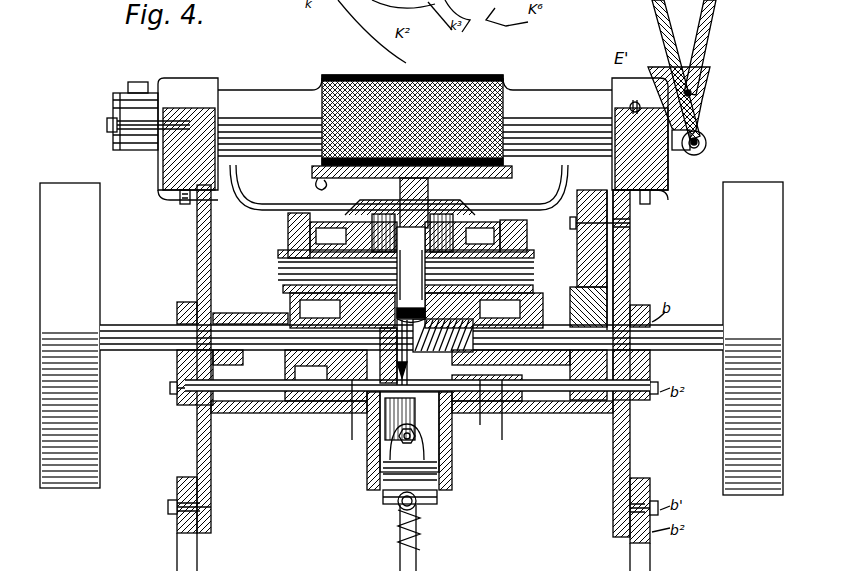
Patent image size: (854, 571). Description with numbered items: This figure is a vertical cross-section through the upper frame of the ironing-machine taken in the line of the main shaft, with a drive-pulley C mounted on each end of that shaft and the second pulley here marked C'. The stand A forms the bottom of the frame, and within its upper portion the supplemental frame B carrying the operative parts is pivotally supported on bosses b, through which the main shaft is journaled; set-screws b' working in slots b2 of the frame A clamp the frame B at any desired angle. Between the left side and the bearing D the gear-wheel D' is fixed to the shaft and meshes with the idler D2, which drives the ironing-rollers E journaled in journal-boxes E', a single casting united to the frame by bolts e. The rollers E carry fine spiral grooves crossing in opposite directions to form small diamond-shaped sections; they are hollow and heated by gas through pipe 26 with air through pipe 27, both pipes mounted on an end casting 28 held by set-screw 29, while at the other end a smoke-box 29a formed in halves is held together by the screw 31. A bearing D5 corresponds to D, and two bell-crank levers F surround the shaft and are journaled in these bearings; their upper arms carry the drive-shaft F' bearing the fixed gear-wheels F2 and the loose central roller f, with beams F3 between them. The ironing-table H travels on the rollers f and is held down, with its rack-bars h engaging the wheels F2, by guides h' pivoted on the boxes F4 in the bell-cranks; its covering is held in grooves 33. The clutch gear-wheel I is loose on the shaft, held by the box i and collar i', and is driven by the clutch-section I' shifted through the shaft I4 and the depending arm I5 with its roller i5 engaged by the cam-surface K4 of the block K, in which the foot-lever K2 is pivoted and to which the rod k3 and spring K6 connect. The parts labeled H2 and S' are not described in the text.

The drive-pulley C is at (70, 335).
The wheel C' is at (753, 338).
The stand or bottom portion of the frame A is at (177, 484).
The supplemental frame B is at (452, 442).
The bosses b is at (217, 310).
The set-screws b' is at (178, 508).
The slots b2 is at (170, 388).
The bearing D is at (417, 375).
The gear-wheel D' is at (613, 305).
The idler D2 is at (590, 256).
The bearing D5 is at (330, 400).
The ironing-rollers E is at (415, 113).
The journal-boxes E' is at (188, 127).
The bolts e is at (185, 204).
The bell-crank levers F is at (402, 306).
The drive-shaft F' is at (396, 253).
The gear-wheels F2 is at (410, 191).
The beams F3 is at (405, 220).
The boxes F4 is at (280, 254).
The ironing-table H is at (520, 172).
The cylinder H2 is at (412, 250).
The central wheel or roller f is at (411, 275).
The rack-bars h is at (428, 201).
The guides h' is at (399, 235).
The spring S' is at (397, 188).
The gear-wheel I is at (411, 335).
The clutch-section I' is at (392, 346).
The shaft I4 is at (421, 410).
The depending arm I5 is at (410, 439).
The box i is at (259, 362).
The collar i' is at (269, 380).
The roller i5 is at (430, 442).
The block K is at (430, 500).
The foot-lever K2 is at (416, 556).
The cam-surface K4 is at (360, 440).
The spring K6 is at (420, 522).
The rod k3 is at (402, 560).
The pipe 26 is at (655, 20).
The pipe 27 is at (714, 22).
The end casting 28 is at (703, 97).
The set-screw 29 is at (633, 104).
The smoke-box 29a is at (113, 108).
The screw 31 is at (107, 126).
The grooves 33 is at (318, 185).